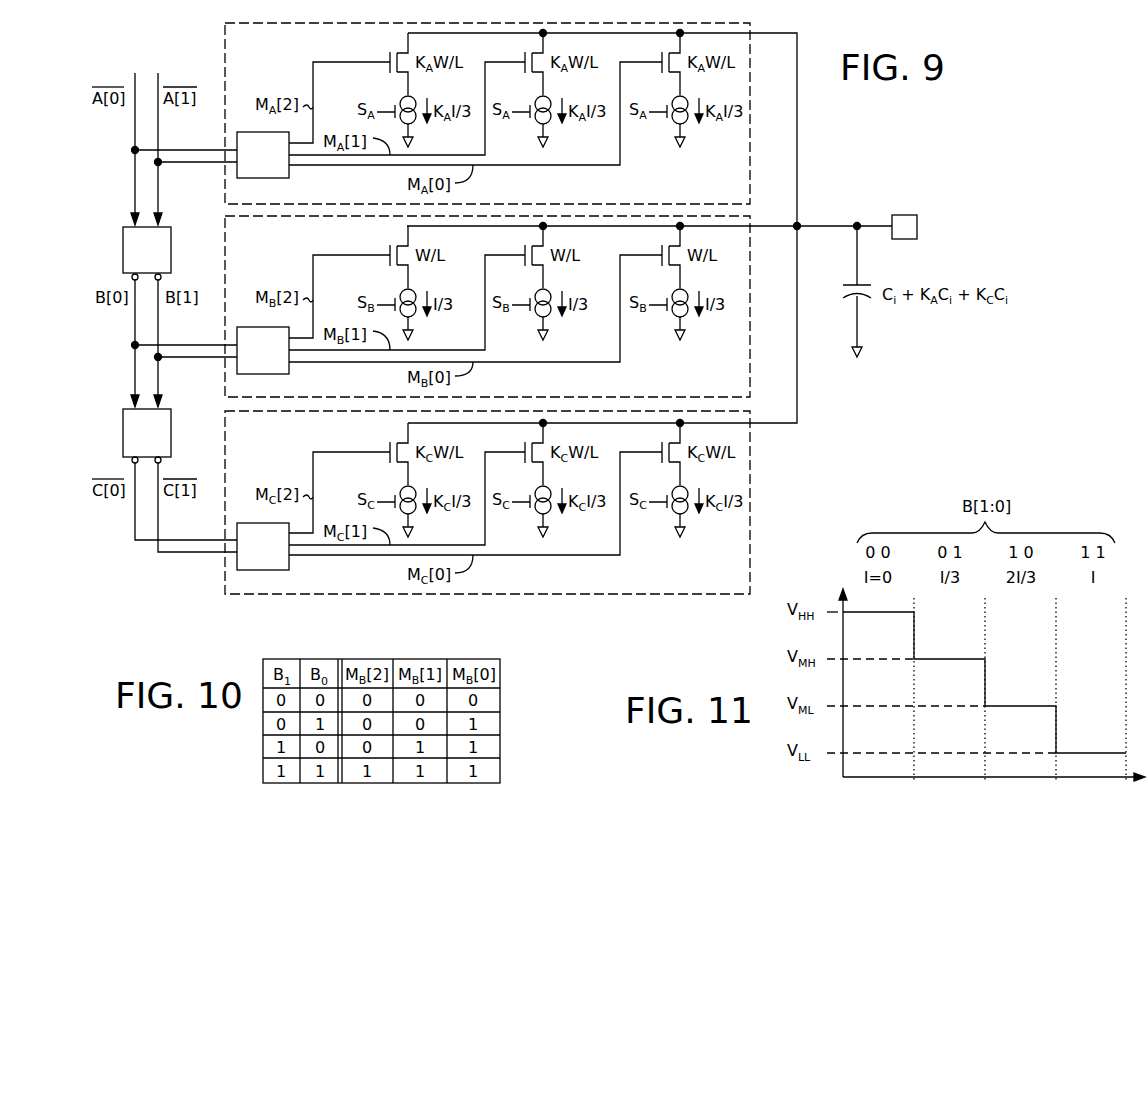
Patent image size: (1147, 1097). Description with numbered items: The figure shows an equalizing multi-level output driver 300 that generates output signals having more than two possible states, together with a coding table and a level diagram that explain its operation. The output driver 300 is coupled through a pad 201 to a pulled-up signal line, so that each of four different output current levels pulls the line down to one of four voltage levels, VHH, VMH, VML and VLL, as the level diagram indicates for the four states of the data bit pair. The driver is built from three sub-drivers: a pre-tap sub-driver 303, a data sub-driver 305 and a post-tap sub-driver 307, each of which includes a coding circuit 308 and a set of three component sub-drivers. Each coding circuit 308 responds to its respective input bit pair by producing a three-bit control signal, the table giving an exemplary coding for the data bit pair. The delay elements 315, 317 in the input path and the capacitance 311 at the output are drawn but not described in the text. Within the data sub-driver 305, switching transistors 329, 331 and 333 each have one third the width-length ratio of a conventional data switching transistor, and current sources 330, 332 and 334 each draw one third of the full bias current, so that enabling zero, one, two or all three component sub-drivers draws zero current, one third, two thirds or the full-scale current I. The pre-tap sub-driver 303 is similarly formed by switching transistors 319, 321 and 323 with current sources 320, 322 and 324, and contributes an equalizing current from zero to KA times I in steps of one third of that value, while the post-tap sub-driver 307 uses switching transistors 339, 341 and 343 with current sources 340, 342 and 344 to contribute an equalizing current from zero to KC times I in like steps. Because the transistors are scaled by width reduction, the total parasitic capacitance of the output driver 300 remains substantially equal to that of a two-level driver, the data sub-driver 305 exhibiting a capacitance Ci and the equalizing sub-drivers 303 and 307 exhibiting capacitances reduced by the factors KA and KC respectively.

The multi-level output driver 300 is at (852, 152).
The pad 201 is at (905, 215).
The pre-tap sub-driver 303 is at (743, 200).
The data sub-driver 305 is at (743, 200).
The post-tap sub-driver 307 is at (487, 502).
The coding circuit 308 is at (263, 351).
The output capacitor 311 is at (850, 300).
The delay element 1/Z 315 is at (172, 241).
The delay element 1/Z 317 is at (172, 423).
The switching transistor 319 is at (402, 46).
The current source 320 is at (413, 122).
The switching transistor 321 is at (537, 46).
The current source 322 is at (548, 122).
The switching transistor 323 is at (674, 46).
The current source 324 is at (685, 122).
The switching transistor 329 is at (380, 255).
The current source 330 is at (424, 317).
The switching transistor 331 is at (515, 255).
The current source 332 is at (559, 317).
The switching transistor 333 is at (652, 255).
The current source 334 is at (696, 317).
The switching transistor 339 is at (380, 452).
The current source 340 is at (424, 514).
The switching transistor 341 is at (515, 452).
The current source 342 is at (559, 514).
The switching transistor 343 is at (652, 452).
The current source 344 is at (696, 514).